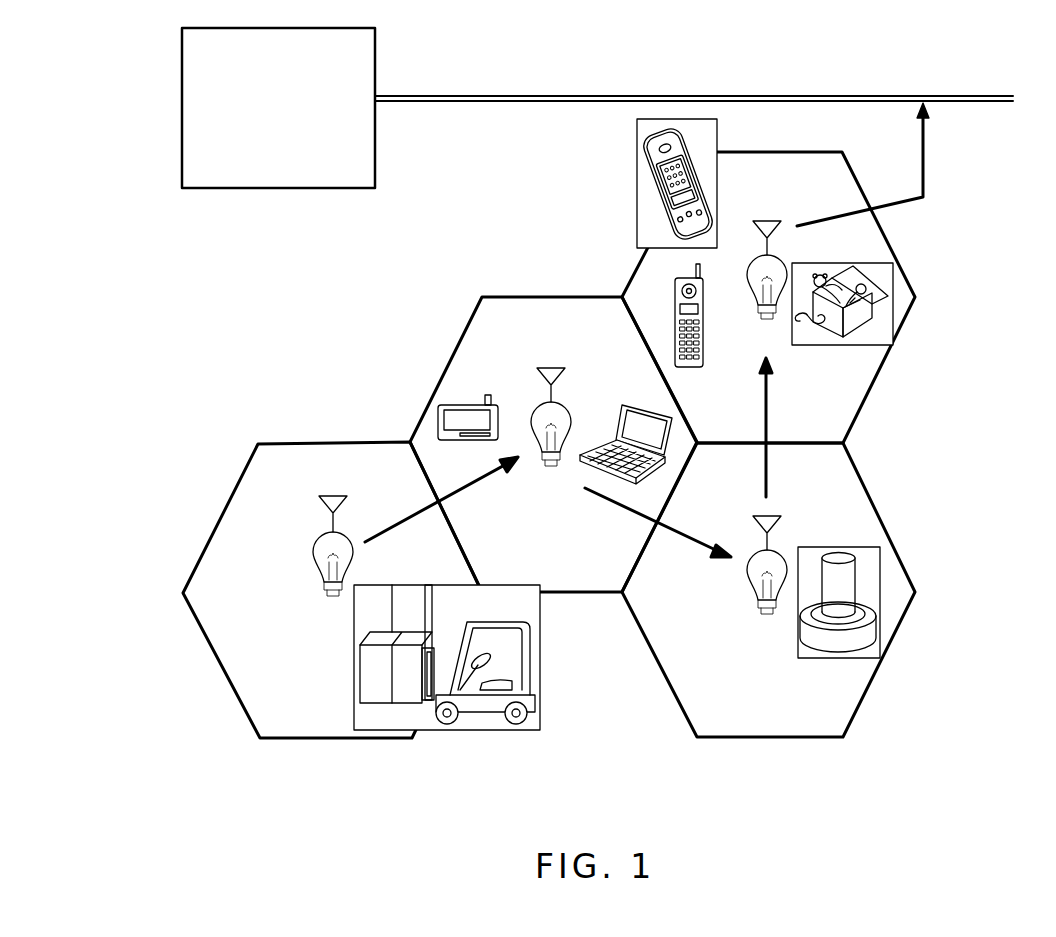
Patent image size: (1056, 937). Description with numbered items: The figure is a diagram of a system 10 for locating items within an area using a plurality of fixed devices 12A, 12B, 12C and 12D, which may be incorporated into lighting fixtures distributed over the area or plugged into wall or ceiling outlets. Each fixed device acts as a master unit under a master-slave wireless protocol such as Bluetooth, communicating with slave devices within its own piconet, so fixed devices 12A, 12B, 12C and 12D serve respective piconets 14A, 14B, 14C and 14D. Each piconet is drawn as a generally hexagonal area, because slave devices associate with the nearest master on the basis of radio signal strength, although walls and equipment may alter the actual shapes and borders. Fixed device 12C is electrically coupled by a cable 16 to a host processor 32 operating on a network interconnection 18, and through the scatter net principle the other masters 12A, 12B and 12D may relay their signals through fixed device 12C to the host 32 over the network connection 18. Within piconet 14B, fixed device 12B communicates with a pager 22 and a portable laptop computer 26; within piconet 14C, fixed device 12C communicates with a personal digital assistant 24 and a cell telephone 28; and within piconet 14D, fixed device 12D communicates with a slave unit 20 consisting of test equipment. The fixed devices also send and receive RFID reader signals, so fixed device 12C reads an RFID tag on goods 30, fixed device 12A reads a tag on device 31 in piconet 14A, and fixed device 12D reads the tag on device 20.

The wireless communication system 10 is at (95, 316).
The fixed device 12A is at (780, 555).
The fixed device 12B is at (533, 408).
The fixed device 12C is at (780, 257).
The fixed device 12D is at (314, 548).
The piconet 14A is at (870, 494).
The piconet 14B is at (452, 355).
The piconet 14C is at (862, 407).
The piconet 14D is at (235, 693).
The cable 16 is at (923, 132).
The network interconnection 18 is at (568, 96).
The test equipment 20 is at (403, 680).
The pager 22 is at (443, 411).
The personal digital assistant 24 is at (653, 186).
The portable laptop computer 26 is at (621, 410).
The cell telephone 28 is at (674, 304).
The goods 30 is at (860, 316).
The device 31 is at (860, 589).
The host processor 32 is at (182, 110).